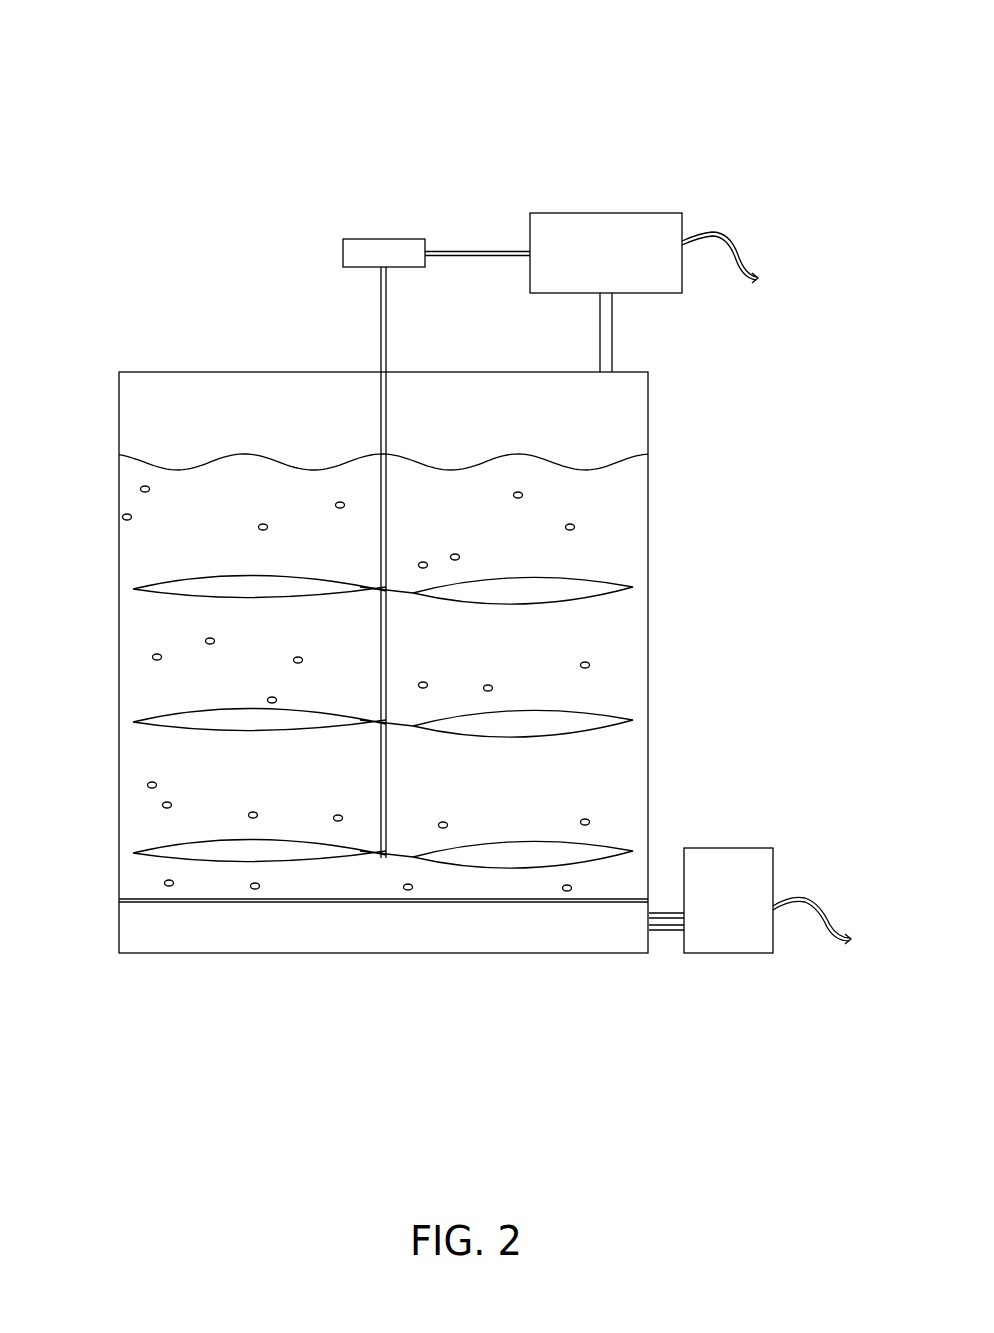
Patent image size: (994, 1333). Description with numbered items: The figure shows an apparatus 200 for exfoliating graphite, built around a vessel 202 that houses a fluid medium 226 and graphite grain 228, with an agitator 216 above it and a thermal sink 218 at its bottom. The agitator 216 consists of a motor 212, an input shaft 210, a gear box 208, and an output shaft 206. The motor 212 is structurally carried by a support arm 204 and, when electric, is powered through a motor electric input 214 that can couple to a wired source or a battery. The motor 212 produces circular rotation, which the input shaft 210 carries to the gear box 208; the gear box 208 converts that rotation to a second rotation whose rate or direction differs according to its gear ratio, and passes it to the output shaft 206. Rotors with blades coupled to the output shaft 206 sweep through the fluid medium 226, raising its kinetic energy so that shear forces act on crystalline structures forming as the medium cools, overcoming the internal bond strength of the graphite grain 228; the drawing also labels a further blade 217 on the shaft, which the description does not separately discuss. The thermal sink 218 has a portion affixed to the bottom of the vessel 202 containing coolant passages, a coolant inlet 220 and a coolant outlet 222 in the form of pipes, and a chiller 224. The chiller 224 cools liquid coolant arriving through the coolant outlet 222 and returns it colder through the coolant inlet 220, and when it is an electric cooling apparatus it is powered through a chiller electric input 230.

The apparatus for exfoliating graphite 200 is at (200, 50).
The vessel 202 is at (117, 763).
The support arm 204 is at (615, 328).
The output shaft 206 is at (378, 327).
The gear box 208 is at (362, 238).
The input shaft 210 is at (475, 250).
The motor 212 is at (605, 211).
The motor electric input 214 is at (729, 240).
The agitator 216 is at (158, 583).
The right agitator blade 217 is at (572, 605).
The thermal sink 218 is at (117, 925).
The coolant inlet 220 is at (665, 909).
The coolant outlet 222 is at (665, 934).
The chiller 224 is at (729, 846).
The fluid medium 226 is at (588, 472).
The graphite grain 228 is at (137, 489).
The chiller electric input 230 is at (821, 905).